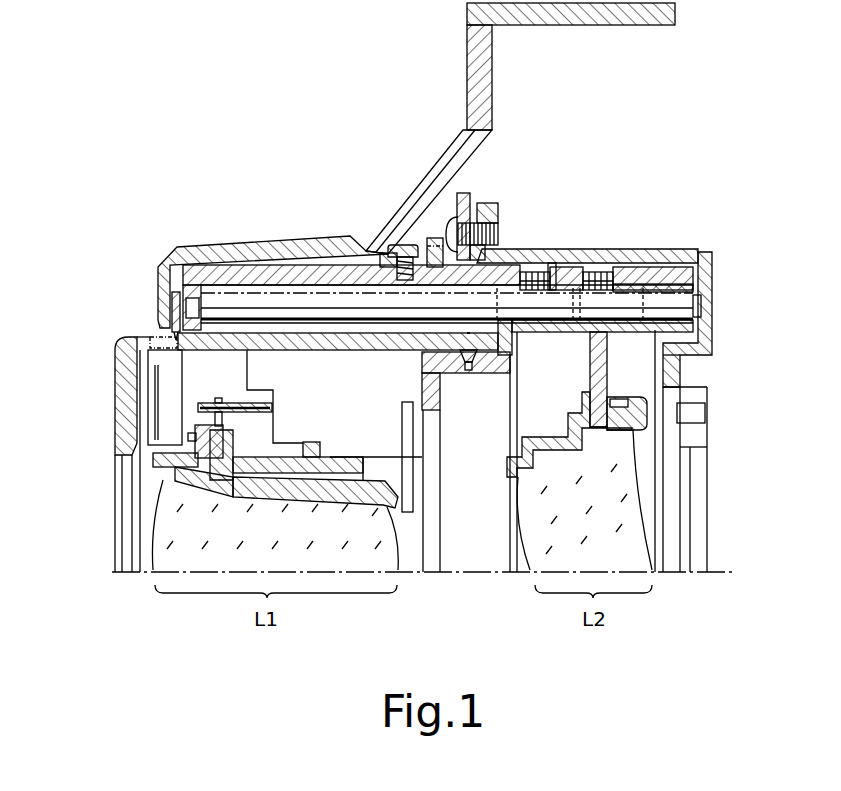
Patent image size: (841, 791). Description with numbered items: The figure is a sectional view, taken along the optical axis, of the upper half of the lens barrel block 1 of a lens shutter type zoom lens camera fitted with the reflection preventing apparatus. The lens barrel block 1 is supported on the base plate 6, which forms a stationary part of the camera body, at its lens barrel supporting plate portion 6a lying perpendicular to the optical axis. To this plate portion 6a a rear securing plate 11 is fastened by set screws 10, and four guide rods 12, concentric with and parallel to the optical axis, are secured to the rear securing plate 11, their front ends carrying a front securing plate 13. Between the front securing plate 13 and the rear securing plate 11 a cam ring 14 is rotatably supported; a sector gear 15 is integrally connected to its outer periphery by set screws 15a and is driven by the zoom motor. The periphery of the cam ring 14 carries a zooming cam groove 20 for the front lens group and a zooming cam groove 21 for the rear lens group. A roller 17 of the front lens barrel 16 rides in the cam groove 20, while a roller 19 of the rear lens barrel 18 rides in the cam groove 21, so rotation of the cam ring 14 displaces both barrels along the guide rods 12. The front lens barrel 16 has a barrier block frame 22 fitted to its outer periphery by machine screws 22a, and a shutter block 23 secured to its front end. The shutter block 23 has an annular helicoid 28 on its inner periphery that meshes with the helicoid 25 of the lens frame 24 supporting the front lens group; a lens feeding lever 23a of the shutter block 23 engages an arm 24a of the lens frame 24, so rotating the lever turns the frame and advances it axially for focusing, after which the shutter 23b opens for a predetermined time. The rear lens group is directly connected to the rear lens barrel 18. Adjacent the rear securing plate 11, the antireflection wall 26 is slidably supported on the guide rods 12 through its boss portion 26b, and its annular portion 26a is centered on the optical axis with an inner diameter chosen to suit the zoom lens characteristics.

The lens barrel block 1 is at (720, 341).
The base plate 6 is at (520, 128).
The lens barrel supporting plate portion 6a is at (463, 192).
The set screws 10 is at (502, 210).
The rear securing plate 11 is at (670, 252).
The guide rods 12 is at (325, 298).
The front securing plate 13 is at (218, 253).
The cam ring 14 is at (270, 273).
The sector gear 15 is at (435, 240).
The set screws 15a is at (407, 248).
The front lens barrel 16 is at (488, 367).
The roller 17 is at (530, 275).
The rear lens barrel 18 is at (590, 378).
The roller 19 is at (600, 270).
The zooming cam groove 20 is at (552, 267).
The zooming cam groove 21 is at (635, 252).
The barrier block frame 22 is at (370, 343).
The machine screws 22a is at (473, 367).
The shutter block 23 is at (318, 391).
The lens feeding lever 23a is at (240, 400).
The shutter 23b is at (413, 490).
The lens frame 24 is at (373, 488).
The arm 24a is at (180, 418).
The helicoid 25 is at (258, 458).
The antireflection wall 26 is at (698, 250).
The annular portion 26a is at (658, 377).
The boss portion 26b is at (688, 340).
The helicoid 28 is at (285, 457).